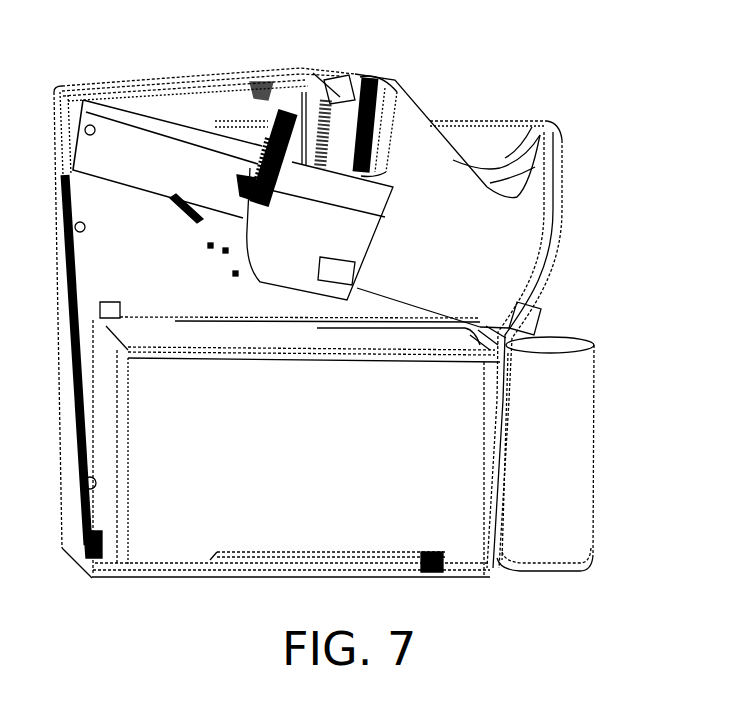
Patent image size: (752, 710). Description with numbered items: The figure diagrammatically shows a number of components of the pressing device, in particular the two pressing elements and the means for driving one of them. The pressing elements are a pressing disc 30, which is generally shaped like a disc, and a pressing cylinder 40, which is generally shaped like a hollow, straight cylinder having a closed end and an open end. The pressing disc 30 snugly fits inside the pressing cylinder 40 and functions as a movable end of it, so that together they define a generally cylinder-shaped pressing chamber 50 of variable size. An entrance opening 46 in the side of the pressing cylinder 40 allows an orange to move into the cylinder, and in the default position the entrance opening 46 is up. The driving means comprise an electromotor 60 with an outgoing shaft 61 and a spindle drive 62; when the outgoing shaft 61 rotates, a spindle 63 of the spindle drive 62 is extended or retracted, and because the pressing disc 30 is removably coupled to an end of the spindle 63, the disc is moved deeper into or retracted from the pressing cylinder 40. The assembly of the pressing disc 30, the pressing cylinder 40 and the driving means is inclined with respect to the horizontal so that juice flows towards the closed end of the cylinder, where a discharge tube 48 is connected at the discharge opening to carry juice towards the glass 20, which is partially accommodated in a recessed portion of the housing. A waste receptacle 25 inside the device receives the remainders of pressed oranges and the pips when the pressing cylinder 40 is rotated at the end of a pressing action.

The glass 20 is at (575, 390).
The waste receptacle 25 is at (480, 453).
The pressing disc 30 is at (348, 82).
The pressing cylinder 40 is at (517, 240).
The entrance opening 46 is at (508, 145).
The discharge tube 48 is at (530, 317).
The pressing chamber 50 is at (469, 147).
The electromotor 60 is at (122, 145).
The outgoing shaft 61 is at (243, 190).
The spindle drive 62 is at (272, 108).
The spindle 63 is at (172, 130).